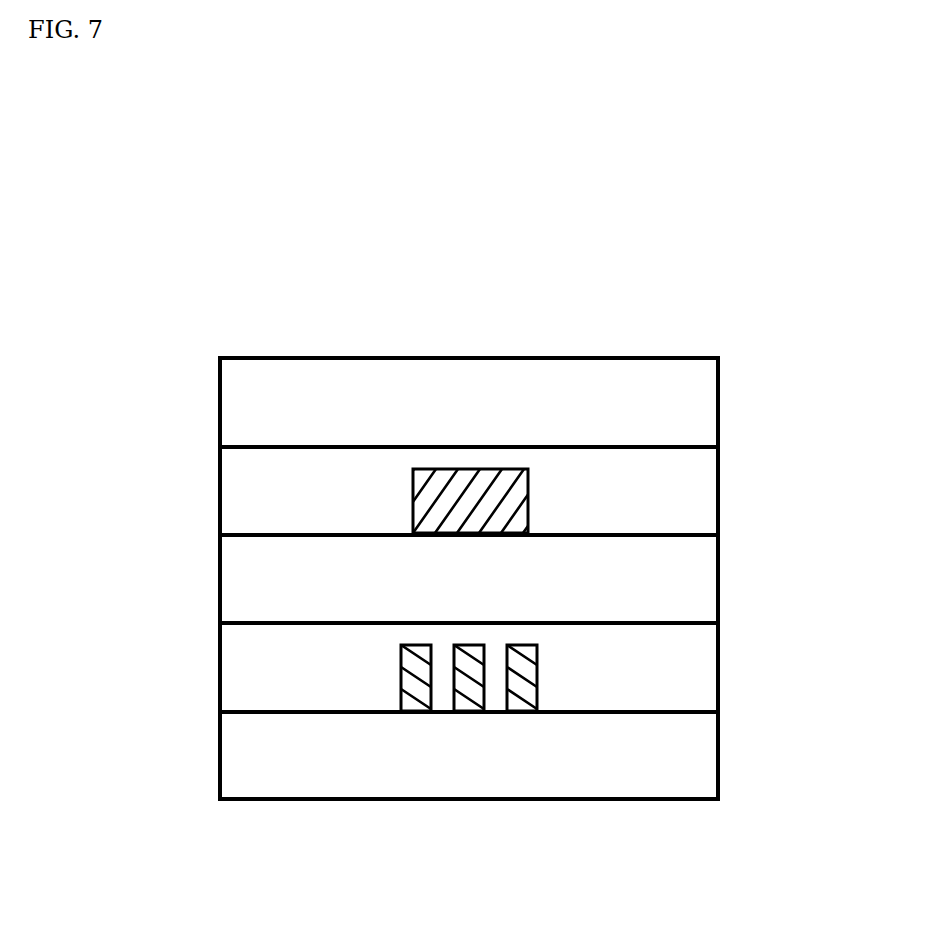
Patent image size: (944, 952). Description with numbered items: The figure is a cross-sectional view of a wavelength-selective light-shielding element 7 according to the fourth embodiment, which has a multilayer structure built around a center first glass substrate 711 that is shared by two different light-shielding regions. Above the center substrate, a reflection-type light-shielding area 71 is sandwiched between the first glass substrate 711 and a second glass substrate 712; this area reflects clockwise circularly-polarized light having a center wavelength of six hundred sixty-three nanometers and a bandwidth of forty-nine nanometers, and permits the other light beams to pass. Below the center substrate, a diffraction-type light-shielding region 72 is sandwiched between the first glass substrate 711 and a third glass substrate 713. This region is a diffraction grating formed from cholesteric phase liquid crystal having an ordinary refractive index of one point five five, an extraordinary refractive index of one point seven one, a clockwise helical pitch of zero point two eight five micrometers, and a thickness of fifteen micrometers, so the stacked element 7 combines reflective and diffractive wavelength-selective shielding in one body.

The wavelength-selective light-shielding element 7 is at (700, 223).
The reflection-type light-shielding area 71 is at (469, 490).
The diffraction-type light-shielding region 72 is at (545, 812).
The first glass substrate 711 is at (708, 580).
The second glass substrate 712 is at (708, 407).
The third glass substrate 713 is at (708, 758).